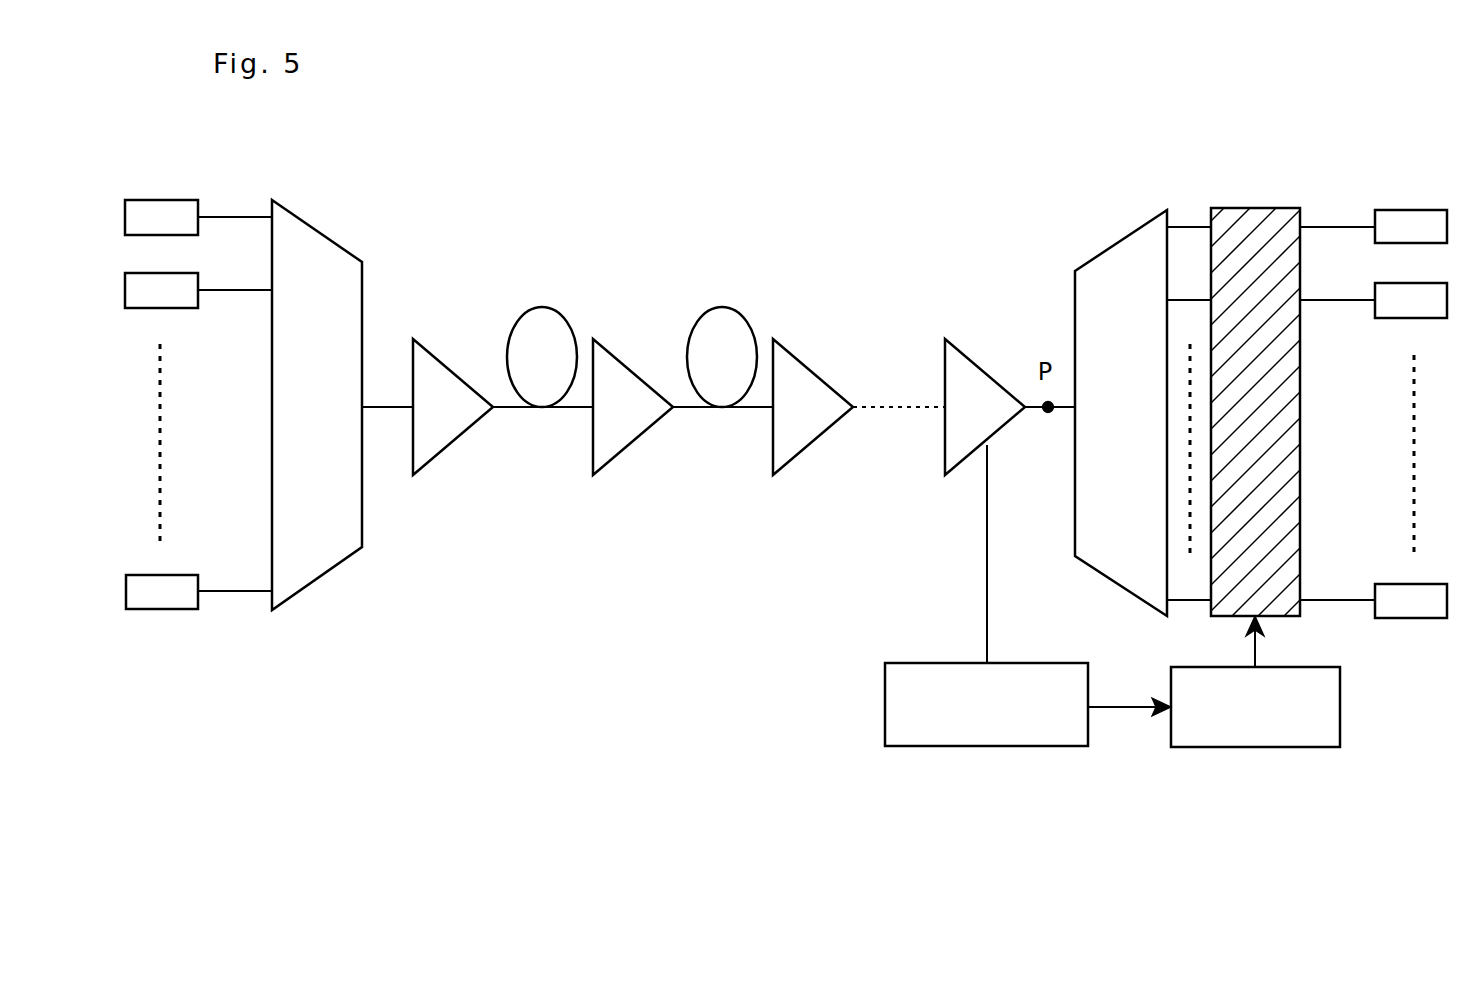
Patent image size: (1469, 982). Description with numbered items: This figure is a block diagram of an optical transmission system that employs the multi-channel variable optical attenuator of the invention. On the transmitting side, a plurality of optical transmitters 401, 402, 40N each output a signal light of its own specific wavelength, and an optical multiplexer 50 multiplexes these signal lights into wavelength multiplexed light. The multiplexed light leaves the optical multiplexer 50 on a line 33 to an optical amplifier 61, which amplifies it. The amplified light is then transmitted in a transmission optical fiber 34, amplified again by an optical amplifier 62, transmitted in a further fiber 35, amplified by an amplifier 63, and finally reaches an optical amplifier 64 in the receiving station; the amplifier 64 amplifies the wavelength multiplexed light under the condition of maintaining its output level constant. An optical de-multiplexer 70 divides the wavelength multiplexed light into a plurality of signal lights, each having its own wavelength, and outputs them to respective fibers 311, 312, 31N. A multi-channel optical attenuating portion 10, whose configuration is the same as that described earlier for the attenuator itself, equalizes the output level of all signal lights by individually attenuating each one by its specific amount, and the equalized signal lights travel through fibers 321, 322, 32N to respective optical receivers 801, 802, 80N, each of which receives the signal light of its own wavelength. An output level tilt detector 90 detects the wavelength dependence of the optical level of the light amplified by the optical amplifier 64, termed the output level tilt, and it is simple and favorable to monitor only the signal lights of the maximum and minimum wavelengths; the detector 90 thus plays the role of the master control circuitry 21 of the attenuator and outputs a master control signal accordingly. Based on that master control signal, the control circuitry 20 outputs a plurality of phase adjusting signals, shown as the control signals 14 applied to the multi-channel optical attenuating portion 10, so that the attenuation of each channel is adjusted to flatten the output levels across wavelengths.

The optical transmitter 401 is at (198, 217).
The optical transmitter 402 is at (198, 290).
The optical transmitter 40N is at (199, 592).
The optical multiplexer 50 is at (317, 405).
The optical transmission line 33 is at (384, 407).
The optical amplifier 61 is at (453, 407).
The transmission optical fiber 34 is at (542, 307).
The optical amplifier 62 is at (633, 407).
The fiber 35 is at (722, 307).
The optical amplifier 63 is at (813, 407).
The optical amplifier 64 is at (985, 407).
The optical de-multiplexer 70 is at (1121, 413).
The fiber 311 is at (1194, 227).
The fiber 312 is at (1183, 300).
The fiber 31N is at (1196, 600).
The multi-channel optical attenuating portion 10 is at (1241, 208).
The fiber 321 is at (1327, 227).
The fiber 322 is at (1323, 300).
The fiber 32N is at (1320, 600).
The optical receiver 801 is at (1411, 226).
The optical receiver 802 is at (1411, 300).
The optical receiver 80N is at (1411, 601).
The control signals 14_1-N 14 is at (1257, 645).
The output level tilt detector 90 is at (970, 746).
The master control circuitry 21 is at (1115, 707).
The control circuitry 20 is at (1340, 708).